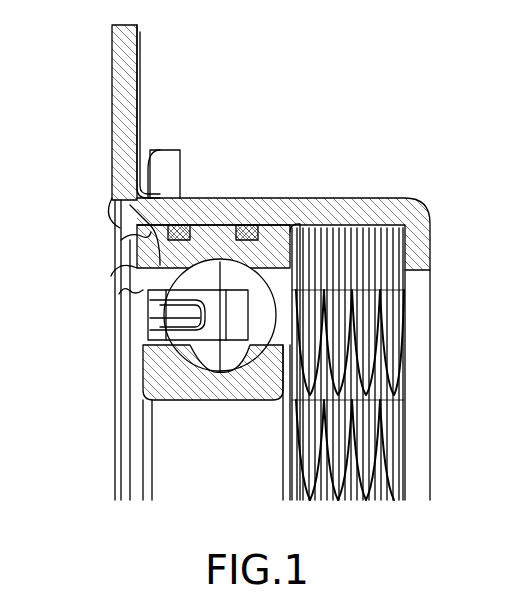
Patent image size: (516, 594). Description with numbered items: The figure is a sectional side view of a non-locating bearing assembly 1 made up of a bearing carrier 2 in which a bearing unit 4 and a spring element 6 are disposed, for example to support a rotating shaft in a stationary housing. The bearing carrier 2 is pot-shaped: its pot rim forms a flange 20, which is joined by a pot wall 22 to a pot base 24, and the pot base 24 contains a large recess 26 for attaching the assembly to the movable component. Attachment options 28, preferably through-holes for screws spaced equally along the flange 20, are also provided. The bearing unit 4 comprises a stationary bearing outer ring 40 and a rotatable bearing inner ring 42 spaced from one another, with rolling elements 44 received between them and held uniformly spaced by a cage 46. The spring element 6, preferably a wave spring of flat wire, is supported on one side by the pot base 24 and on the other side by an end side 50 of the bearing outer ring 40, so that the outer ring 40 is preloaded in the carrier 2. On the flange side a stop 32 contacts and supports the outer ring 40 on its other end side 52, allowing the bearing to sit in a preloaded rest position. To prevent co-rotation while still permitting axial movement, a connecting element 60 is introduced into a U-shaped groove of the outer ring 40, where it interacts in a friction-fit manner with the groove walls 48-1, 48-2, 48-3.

The non-locating bearing assembly 1 is at (247, 57).
The bearing carrier 2 is at (100, 77).
The bearing unit 4 is at (100, 388).
The spring element 6 is at (405, 464).
The flange 20 is at (130, 64).
The pot wall 22 is at (263, 198).
The pot base 24 is at (422, 235).
The large recess 26 is at (420, 378).
The attachment options 28 is at (166, 161).
The stop 32 is at (130, 235).
The bearing outer ring 40 is at (298, 232).
The bearing inner ring 42 is at (184, 382).
The rolling elements 44 is at (232, 350).
The cage 46 is at (147, 334).
The groove wall 48-1 is at (130, 200).
The groove wall 48-2 is at (128, 270).
The groove wall 48-3 is at (130, 290).
The end side 50 is at (334, 232).
The end side 52 is at (130, 258).
The connecting element 60 is at (244, 224).